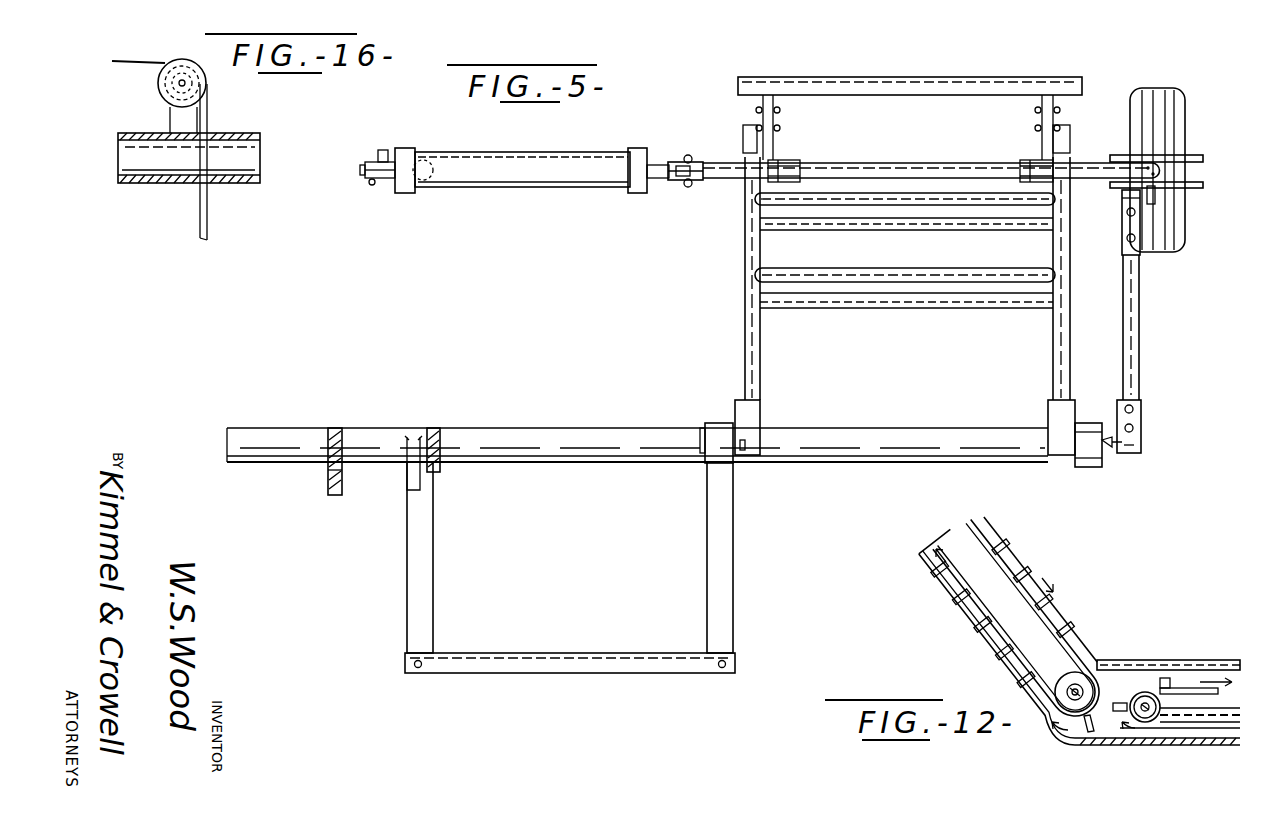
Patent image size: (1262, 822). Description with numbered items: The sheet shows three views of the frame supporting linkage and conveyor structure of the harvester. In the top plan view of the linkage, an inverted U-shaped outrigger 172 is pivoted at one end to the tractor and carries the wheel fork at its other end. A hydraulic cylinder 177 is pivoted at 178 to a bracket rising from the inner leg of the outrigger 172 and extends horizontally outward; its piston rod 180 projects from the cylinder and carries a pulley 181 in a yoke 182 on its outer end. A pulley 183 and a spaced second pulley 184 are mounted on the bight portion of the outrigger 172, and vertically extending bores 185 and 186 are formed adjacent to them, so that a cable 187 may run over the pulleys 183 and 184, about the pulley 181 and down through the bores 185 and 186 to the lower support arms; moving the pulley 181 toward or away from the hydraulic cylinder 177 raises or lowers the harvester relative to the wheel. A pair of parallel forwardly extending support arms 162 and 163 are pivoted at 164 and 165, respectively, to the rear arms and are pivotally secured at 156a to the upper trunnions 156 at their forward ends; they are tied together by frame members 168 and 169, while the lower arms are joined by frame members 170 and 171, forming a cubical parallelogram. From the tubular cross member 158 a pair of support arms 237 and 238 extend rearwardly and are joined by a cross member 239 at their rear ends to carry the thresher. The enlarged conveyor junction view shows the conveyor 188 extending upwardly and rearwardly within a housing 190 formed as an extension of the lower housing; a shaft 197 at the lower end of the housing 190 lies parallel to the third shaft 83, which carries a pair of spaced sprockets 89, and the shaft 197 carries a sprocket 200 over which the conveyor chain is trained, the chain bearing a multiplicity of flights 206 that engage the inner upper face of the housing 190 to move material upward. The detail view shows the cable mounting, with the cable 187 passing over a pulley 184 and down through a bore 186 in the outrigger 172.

In FIG. 12, the third shaft 83 is at (1148, 717).
In FIG. 12, the spaced apart sprockets 89 is at (1148, 708).
In FIG. 5, the upper trunnions 156 is at (775, 116).
In FIG. 5, the pivot 156a is at (780, 116).
In FIG. 5, the tubular cross member 158 is at (560, 430).
In FIG. 5, the support arm 162 is at (1052, 355).
In FIG. 5, the support arm 163 is at (762, 358).
In FIG. 5, the pivot 164 is at (1062, 445).
In FIG. 5, the pivot 165 is at (750, 447).
In FIG. 5, the frame member 168 is at (883, 273).
In FIG. 5, the frame member 169 is at (930, 195).
In FIG. 5, the frame member 170 is at (942, 297).
In FIG. 5, the frame member 171 is at (960, 223).
In FIG. 16, the outrigger 172 is at (248, 133).
In FIG. 5, the outrigger 172 is at (877, 163).
In FIG. 5, the hydraulic cylinder 177 is at (470, 172).
In FIG. 5, the pivot 178 is at (388, 150).
In FIG. 5, the piston rod 180 is at (655, 183).
In FIG. 5, the pulley 181 is at (678, 180).
In FIG. 5, the yoke 182 is at (667, 160).
In FIG. 5, the pulley 183 is at (778, 162).
In FIG. 16, the second pulley 184 is at (159, 88).
In FIG. 5, the second pulley 184 is at (1028, 163).
In FIG. 5, the vertically extending bore 185 is at (802, 163).
In FIG. 16, the vertically extending bore 186 is at (210, 133).
In FIG. 5, the vertically extending bore 186 is at (1048, 170).
In FIG. 16, the cable 187 is at (205, 118).
In FIG. 5, the cable 187 is at (728, 178).
In FIG. 12, the conveyor 188 is at (1065, 573).
In FIG. 12, the housing 190 is at (945, 573).
In FIG. 12, the shaft 197 is at (1077, 688).
In FIG. 12, the sprocket 200 is at (1082, 704).
In FIG. 12, the flights 206 is at (1017, 538).
In FIG. 5, the support arm 237 is at (425, 540).
In FIG. 5, the support arm 238 is at (724, 578).
In FIG. 5, the cross member 239 is at (667, 658).